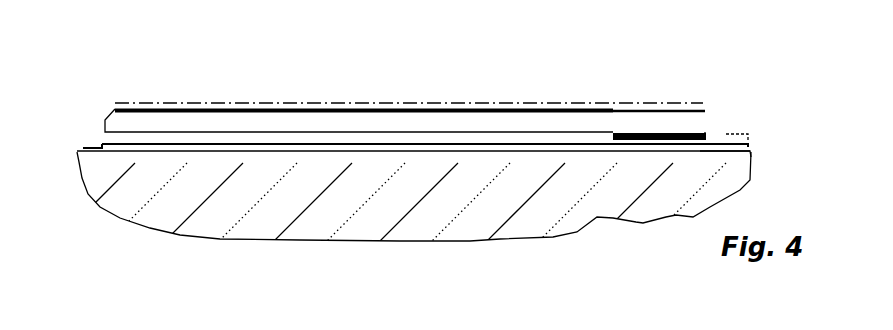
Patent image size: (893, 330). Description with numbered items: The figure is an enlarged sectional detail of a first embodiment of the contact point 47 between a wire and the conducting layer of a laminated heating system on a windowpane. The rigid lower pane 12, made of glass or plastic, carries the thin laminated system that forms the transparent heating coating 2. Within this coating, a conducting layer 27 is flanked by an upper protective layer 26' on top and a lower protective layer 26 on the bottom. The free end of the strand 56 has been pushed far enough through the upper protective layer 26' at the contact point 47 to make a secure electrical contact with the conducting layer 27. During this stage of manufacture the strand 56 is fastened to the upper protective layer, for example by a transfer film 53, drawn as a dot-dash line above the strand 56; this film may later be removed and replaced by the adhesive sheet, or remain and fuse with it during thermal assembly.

The transparent heating coating 2 is at (72, 135).
The lower pane 12 is at (426, 217).
The protective layer 26 is at (761, 168).
The upper protective layer 26' is at (743, 107).
The conducting layer 27 is at (758, 151).
The contact point 47 is at (642, 133).
The transfer film 53 is at (326, 100).
The strand 56 is at (492, 100).